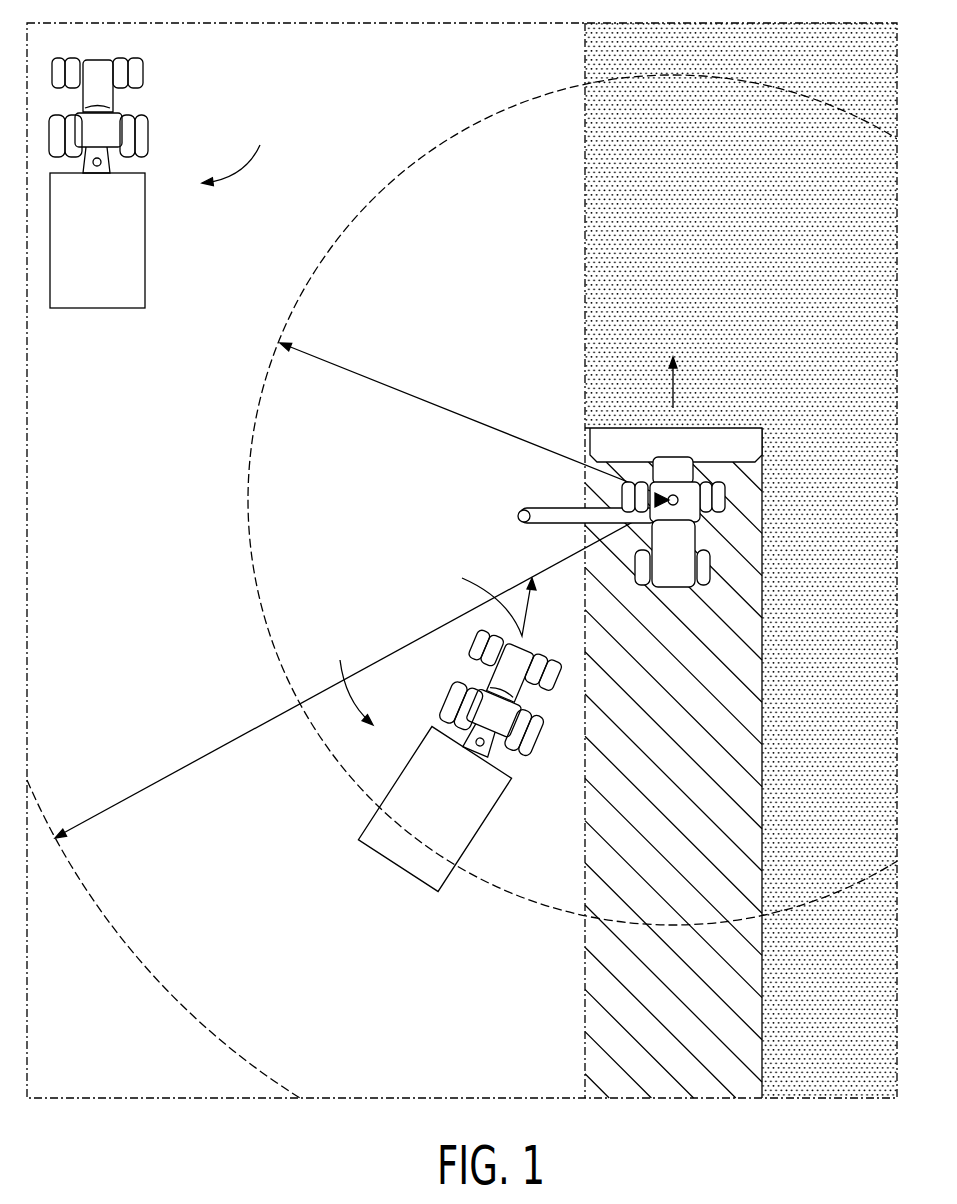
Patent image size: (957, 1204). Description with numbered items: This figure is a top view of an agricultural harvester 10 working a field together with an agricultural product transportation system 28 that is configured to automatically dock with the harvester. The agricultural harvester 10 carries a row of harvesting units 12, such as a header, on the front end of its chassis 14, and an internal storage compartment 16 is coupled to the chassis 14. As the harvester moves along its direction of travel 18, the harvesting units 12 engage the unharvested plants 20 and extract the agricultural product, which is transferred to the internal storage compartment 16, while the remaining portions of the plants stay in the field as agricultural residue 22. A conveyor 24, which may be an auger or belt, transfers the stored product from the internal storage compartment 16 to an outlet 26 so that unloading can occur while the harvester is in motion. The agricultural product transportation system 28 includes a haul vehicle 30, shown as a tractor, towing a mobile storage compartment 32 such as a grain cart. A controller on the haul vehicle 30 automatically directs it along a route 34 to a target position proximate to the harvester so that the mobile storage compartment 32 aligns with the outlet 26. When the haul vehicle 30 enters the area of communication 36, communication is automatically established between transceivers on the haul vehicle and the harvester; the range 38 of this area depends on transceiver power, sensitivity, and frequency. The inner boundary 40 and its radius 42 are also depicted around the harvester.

The agricultural harvester 10 is at (780, 412).
The harvesting units 12 is at (603, 504).
The chassis 14 is at (700, 522).
The internal storage compartment 16 is at (650, 535).
The direction of travel 18 is at (673, 388).
The unharvested plants 20 is at (613, 246).
The agricultural residue 22 is at (611, 825).
The conveyor 24 is at (557, 508).
The outlet 26 is at (516, 515).
The agricultural product transportation system 28 is at (287, 417).
The haul vehicle 30 is at (112, 101).
The mobile storage compartment 32 is at (147, 286).
The route 34 is at (483, 593).
The area of communication 36 is at (95, 905).
The range 38 is at (135, 793).
The first boundary 40 is at (373, 202).
The first radius 42 is at (380, 380).